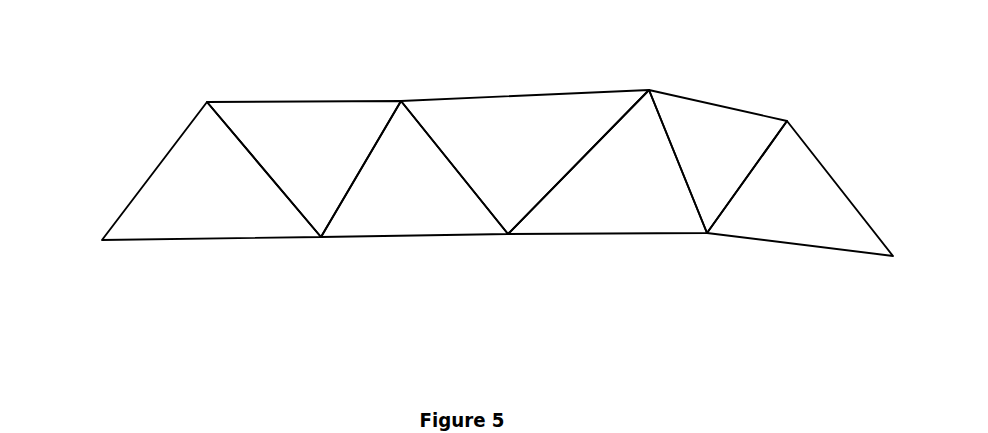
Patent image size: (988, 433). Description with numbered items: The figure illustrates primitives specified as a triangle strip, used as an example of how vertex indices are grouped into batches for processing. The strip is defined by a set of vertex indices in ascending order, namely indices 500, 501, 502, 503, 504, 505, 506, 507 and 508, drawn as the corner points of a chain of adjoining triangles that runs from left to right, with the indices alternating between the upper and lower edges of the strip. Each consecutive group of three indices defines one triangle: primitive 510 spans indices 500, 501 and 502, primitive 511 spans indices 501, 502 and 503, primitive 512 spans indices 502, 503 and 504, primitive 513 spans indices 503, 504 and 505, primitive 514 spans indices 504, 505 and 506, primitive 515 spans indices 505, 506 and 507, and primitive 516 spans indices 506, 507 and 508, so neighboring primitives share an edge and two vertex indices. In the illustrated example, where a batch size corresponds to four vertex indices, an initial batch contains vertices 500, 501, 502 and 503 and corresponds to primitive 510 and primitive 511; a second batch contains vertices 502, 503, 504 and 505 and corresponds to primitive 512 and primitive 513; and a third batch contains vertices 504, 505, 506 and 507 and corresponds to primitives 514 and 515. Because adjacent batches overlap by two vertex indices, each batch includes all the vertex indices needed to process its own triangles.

The vertex index 500 is at (102, 240).
The vertex index 501 is at (207, 102).
The vertex index 502 is at (321, 237).
The vertex index 503 is at (401, 101).
The vertex index 504 is at (508, 234).
The vertex index 505 is at (649, 90).
The vertex index 506 is at (707, 233).
The vertex index 507 is at (787, 121).
The vertex index 508 is at (893, 256).
The primitive 510 is at (190, 220).
The primitive 511 is at (295, 166).
The primitive 512 is at (390, 228).
The primitive 513 is at (497, 174).
The primitive 514 is at (603, 226).
The primitive 515 is at (702, 168).
The primitive 516 is at (773, 236).